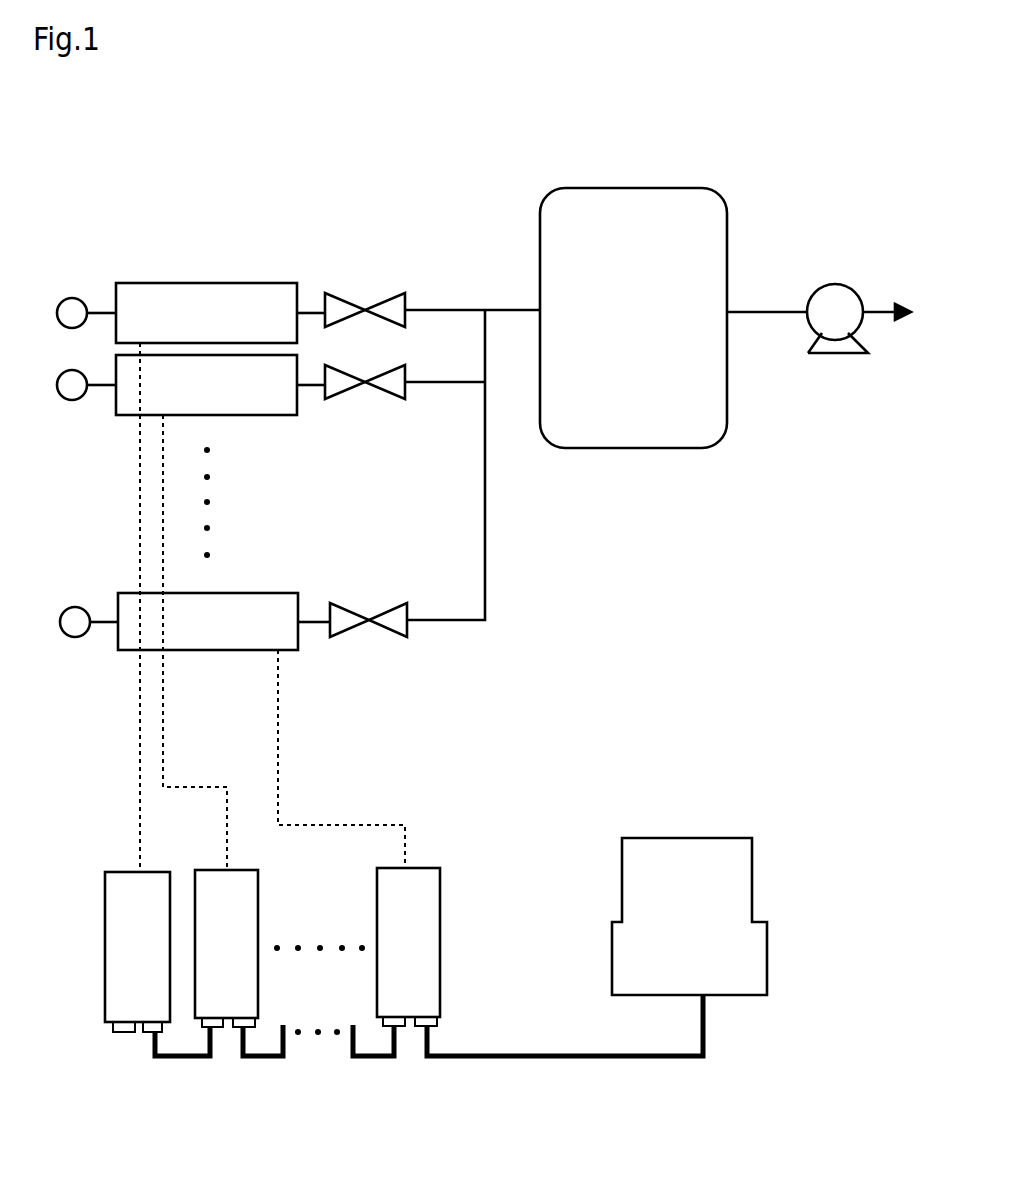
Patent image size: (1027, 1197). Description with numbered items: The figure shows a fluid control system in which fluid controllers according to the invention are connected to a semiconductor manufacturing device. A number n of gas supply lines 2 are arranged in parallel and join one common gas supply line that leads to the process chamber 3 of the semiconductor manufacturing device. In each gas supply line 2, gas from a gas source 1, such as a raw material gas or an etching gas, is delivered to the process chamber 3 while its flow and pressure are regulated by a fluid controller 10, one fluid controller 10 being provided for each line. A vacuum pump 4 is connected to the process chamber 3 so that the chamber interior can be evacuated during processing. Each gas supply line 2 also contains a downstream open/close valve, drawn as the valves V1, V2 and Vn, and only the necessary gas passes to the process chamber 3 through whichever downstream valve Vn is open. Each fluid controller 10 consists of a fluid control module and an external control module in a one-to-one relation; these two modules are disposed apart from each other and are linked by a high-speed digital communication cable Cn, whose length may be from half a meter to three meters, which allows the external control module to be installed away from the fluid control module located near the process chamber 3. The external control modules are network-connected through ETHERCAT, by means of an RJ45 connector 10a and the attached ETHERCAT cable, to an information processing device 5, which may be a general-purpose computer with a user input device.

The gas source 1 is at (75, 298).
The gas supply line 2 is at (455, 305).
The process chamber 3 is at (730, 217).
The vacuum pump 4 is at (856, 288).
The information processing device 5 is at (695, 848).
The fluid controller 10 is at (286, 657).
The RJ45 connector 10a is at (437, 1023).
The high-speed digital communication cable Cn is at (341, 759).
The downstream valve V1 is at (363, 308).
The downstream valve V2 is at (363, 380).
The downstream valve Vn is at (367, 618).